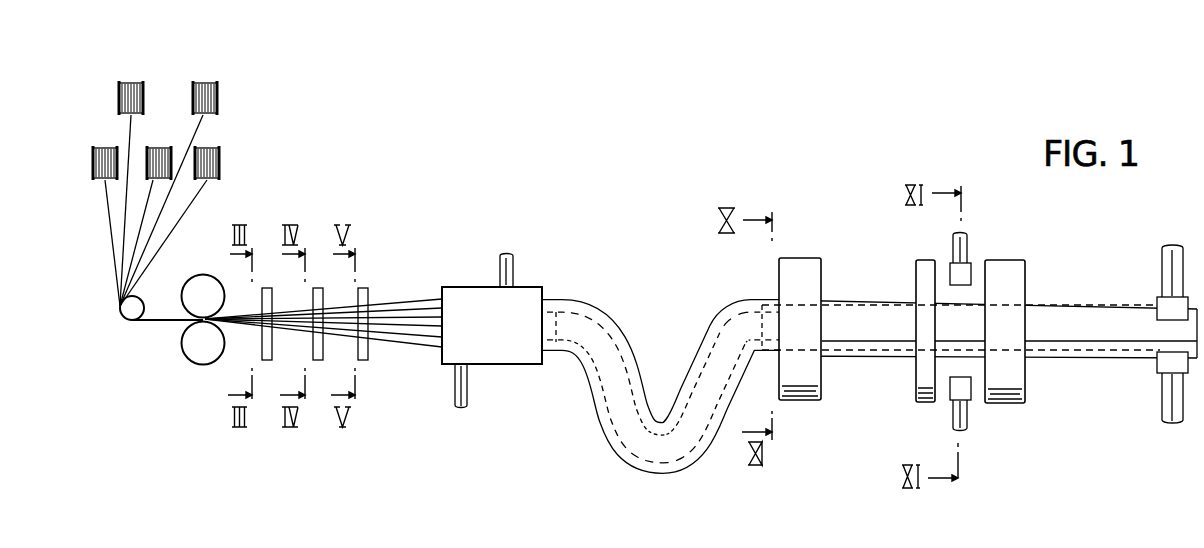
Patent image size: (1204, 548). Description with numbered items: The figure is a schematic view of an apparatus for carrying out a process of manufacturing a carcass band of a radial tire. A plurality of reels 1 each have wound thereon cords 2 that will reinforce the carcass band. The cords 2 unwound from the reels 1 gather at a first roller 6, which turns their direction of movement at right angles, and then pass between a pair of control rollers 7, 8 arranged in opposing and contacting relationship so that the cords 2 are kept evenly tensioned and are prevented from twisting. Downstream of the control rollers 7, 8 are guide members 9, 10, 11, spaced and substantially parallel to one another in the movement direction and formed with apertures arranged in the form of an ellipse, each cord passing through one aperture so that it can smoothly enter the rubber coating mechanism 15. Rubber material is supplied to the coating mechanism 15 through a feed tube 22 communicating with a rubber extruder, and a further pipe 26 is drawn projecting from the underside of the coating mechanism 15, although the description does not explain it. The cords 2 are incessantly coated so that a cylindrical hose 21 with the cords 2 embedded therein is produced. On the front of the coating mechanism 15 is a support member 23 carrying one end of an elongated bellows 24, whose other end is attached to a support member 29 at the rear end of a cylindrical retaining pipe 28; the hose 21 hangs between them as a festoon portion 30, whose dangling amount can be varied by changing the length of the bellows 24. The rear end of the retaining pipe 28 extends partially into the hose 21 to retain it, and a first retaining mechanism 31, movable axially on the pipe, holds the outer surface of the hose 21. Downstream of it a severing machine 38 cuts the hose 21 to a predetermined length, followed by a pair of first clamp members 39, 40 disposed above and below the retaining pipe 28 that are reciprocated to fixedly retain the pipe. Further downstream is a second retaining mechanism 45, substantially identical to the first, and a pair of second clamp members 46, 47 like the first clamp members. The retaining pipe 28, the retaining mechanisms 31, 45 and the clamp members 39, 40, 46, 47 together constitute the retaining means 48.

The reels 1 is at (131, 83).
The cords 2 is at (123, 228).
The first roller 6 is at (141, 298).
The control roller 7 is at (207, 275).
The control roller 8 is at (195, 363).
The guide member 9 is at (262, 292).
The guide member 10 is at (313, 292).
The guide member 11 is at (368, 292).
The rubber coating mechanism 15 is at (458, 287).
The cylindrical hose 21 is at (630, 373).
The feed tube 22 is at (511, 262).
The support member 23 is at (556, 306).
The bellows 24 is at (601, 332).
The outlet pipe 26 is at (467, 398).
The retaining pipe 28 is at (1070, 315).
The support member 29 is at (748, 310).
The festoon portion 30 is at (637, 469).
The first retaining mechanism 31 is at (818, 272).
The severing machine 38 is at (918, 262).
The first clamp member 39 is at (968, 247).
The first clamp member 40 is at (970, 420).
The second retaining mechanism 45 is at (1022, 265).
The second clamp member 46 is at (1157, 303).
The second clamp member 47 is at (1157, 364).
The retaining means 48 is at (932, 410).